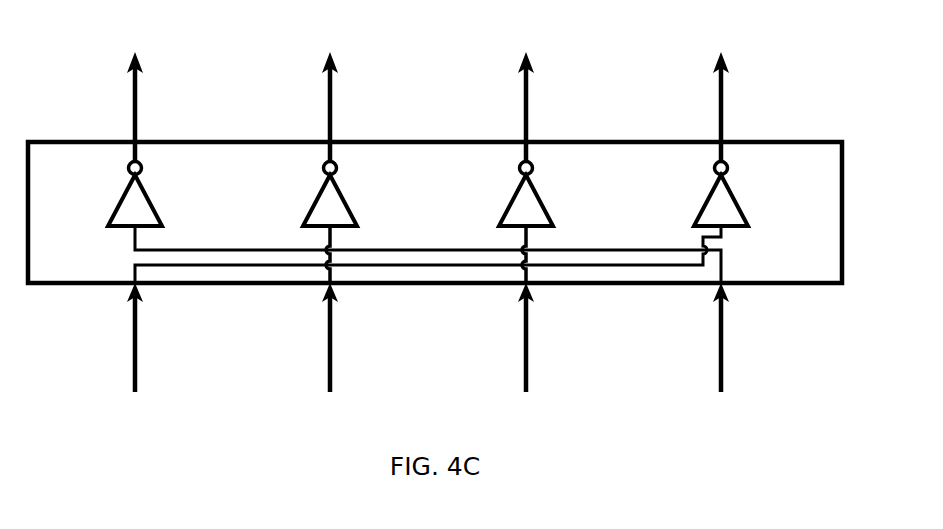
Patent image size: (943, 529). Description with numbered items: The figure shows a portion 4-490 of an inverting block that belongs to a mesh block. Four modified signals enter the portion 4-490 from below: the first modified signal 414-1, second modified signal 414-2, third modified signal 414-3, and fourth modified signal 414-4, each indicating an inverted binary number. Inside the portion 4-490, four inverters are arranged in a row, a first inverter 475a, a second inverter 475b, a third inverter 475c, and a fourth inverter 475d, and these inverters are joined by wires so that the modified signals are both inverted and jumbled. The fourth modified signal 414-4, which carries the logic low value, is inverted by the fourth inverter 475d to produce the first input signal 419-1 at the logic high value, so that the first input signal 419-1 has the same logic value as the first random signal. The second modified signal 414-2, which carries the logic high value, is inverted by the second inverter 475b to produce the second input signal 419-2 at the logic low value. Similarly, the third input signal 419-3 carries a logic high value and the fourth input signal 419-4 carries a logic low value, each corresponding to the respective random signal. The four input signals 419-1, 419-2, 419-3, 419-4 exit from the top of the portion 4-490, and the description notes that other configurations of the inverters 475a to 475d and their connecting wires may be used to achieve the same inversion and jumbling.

The portion of inverting block 4-490 is at (808, 285).
The first input signal 419-1 is at (724, 97).
The second input signal 419-2 is at (529, 97).
The third input signal 419-3 is at (333, 97).
The fourth input signal 419-4 is at (138, 97).
The first inverter 475a is at (741, 207).
The second inverter 475b is at (546, 207).
The third inverter 475c is at (350, 207).
The fourth inverter 475d is at (155, 207).
The first modified signal 414-1 is at (724, 344).
The second modified signal 414-2 is at (529, 344).
The third modified signal 414-3 is at (333, 344).
The fourth modified signal 414-4 is at (138, 344).